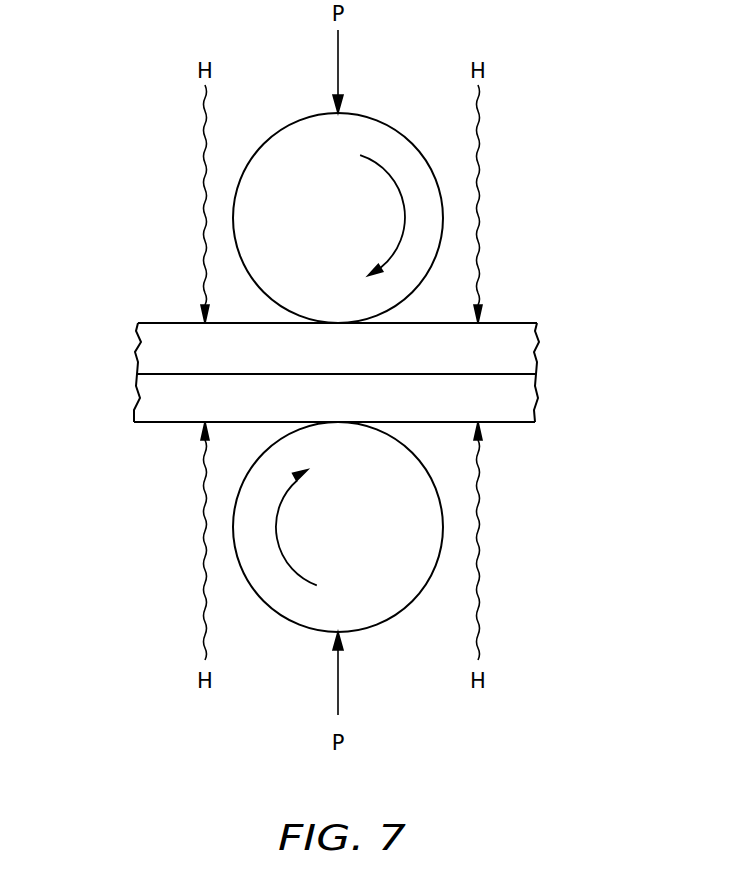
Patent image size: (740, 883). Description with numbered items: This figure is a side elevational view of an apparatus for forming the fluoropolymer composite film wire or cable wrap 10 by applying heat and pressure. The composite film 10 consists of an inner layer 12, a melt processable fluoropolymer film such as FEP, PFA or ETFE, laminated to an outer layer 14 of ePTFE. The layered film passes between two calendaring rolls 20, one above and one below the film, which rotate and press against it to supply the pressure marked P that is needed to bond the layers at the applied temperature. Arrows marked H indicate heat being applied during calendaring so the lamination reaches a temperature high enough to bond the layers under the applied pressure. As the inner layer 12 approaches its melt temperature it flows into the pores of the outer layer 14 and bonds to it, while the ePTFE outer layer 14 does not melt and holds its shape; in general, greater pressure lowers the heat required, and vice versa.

The fluoropolymer composite film wire or cable wrap 10 is at (578, 290).
The inner layer 12 is at (150, 400).
The outer layer 14 is at (152, 348).
The calendaring rolls 20 is at (292, 137).